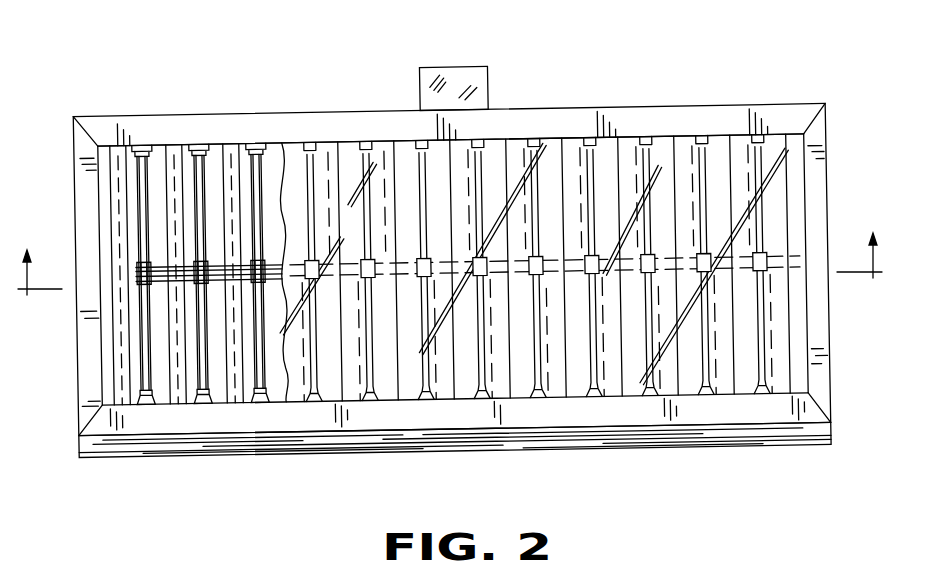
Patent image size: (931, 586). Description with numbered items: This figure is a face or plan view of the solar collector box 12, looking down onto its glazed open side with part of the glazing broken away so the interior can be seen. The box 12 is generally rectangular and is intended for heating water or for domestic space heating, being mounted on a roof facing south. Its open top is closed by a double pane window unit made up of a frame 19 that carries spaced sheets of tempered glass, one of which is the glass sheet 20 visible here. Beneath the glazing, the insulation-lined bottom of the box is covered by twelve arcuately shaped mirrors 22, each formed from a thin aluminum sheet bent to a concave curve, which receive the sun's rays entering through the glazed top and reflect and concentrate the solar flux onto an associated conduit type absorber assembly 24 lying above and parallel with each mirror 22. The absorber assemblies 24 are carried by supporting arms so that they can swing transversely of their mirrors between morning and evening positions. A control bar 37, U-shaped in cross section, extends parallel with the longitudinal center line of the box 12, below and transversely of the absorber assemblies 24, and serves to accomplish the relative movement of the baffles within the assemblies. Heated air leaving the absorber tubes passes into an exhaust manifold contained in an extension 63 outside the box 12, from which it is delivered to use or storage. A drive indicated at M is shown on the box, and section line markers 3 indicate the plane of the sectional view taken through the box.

The collector box 12 is at (795, 97).
The frame 19 is at (700, 115).
The sheet of tempered glass 20 is at (572, 152).
The arcuately shaped mirror 22 is at (179, 147).
The absorber assembly 24 is at (250, 362).
The control bar 37 is at (273, 268).
The extension 63 is at (762, 437).
The motor M is at (470, 75).
The section line 3- 3 is at (449, 278).